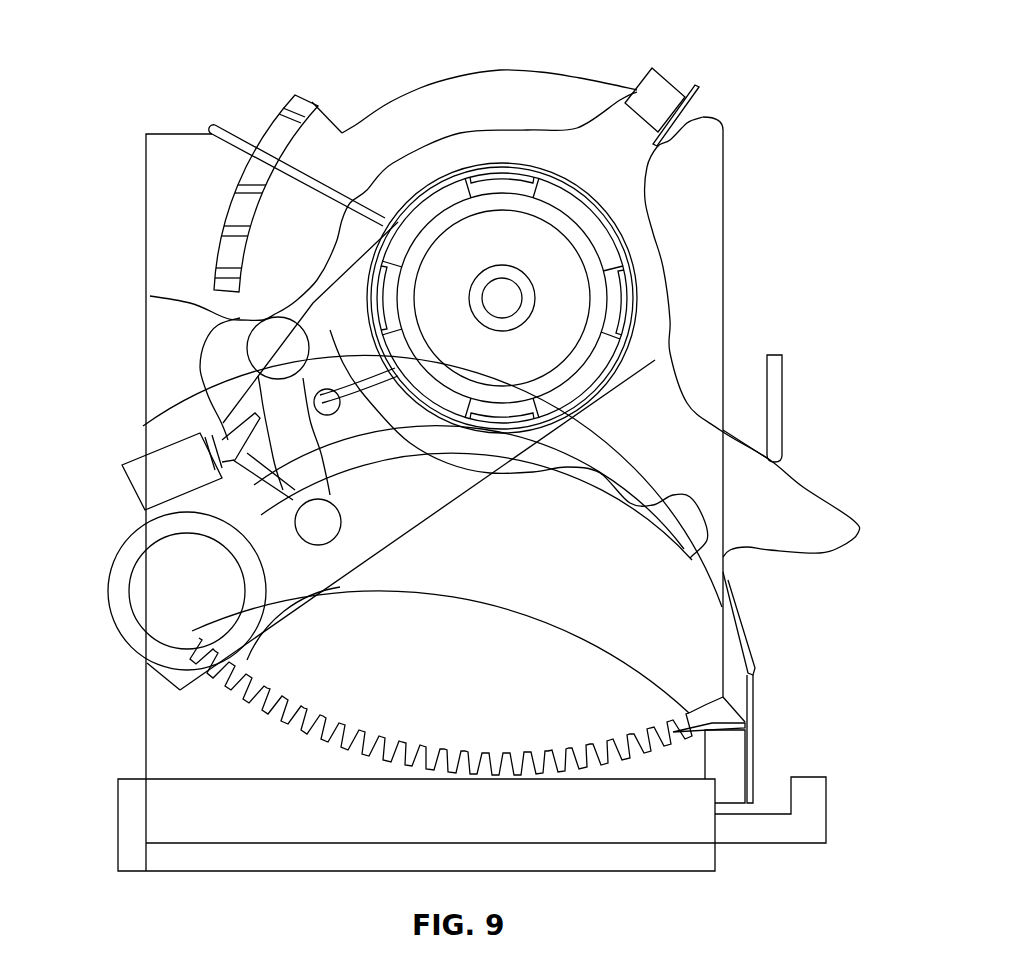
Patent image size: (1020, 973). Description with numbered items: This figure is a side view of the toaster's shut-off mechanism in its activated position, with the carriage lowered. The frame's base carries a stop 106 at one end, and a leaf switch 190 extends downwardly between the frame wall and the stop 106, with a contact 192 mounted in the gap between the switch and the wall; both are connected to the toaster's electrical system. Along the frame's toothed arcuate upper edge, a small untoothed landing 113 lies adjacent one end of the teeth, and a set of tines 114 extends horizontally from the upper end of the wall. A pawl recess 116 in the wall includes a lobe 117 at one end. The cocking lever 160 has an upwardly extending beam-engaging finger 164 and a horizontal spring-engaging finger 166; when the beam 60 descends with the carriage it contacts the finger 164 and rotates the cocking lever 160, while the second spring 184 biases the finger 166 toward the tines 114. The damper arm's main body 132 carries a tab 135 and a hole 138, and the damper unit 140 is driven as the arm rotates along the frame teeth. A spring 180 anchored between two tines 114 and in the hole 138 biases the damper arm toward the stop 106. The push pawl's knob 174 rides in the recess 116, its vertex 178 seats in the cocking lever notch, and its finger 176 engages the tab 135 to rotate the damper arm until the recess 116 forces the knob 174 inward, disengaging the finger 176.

The beam 60 is at (772, 377).
The stop 106 is at (810, 800).
The untoothed landing 113 is at (675, 732).
The tines 114 is at (300, 93).
The pawl recess 116 is at (475, 573).
The lobe 117 is at (687, 521).
The main body 132 is at (372, 518).
The tab 135 is at (138, 462).
The hole 138 is at (317, 395).
The damper unit 140 is at (163, 597).
The cocking lever 160 is at (645, 247).
The beam-engaging finger 164 is at (826, 537).
The spring-engaging finger 166 is at (636, 95).
The knob 174 is at (263, 338).
The finger 176 is at (150, 470).
The vertex 178 is at (230, 697).
The spring 180 is at (330, 190).
The second spring 184 is at (700, 90).
The leaf switch 190 is at (755, 680).
The contact 192 is at (732, 790).